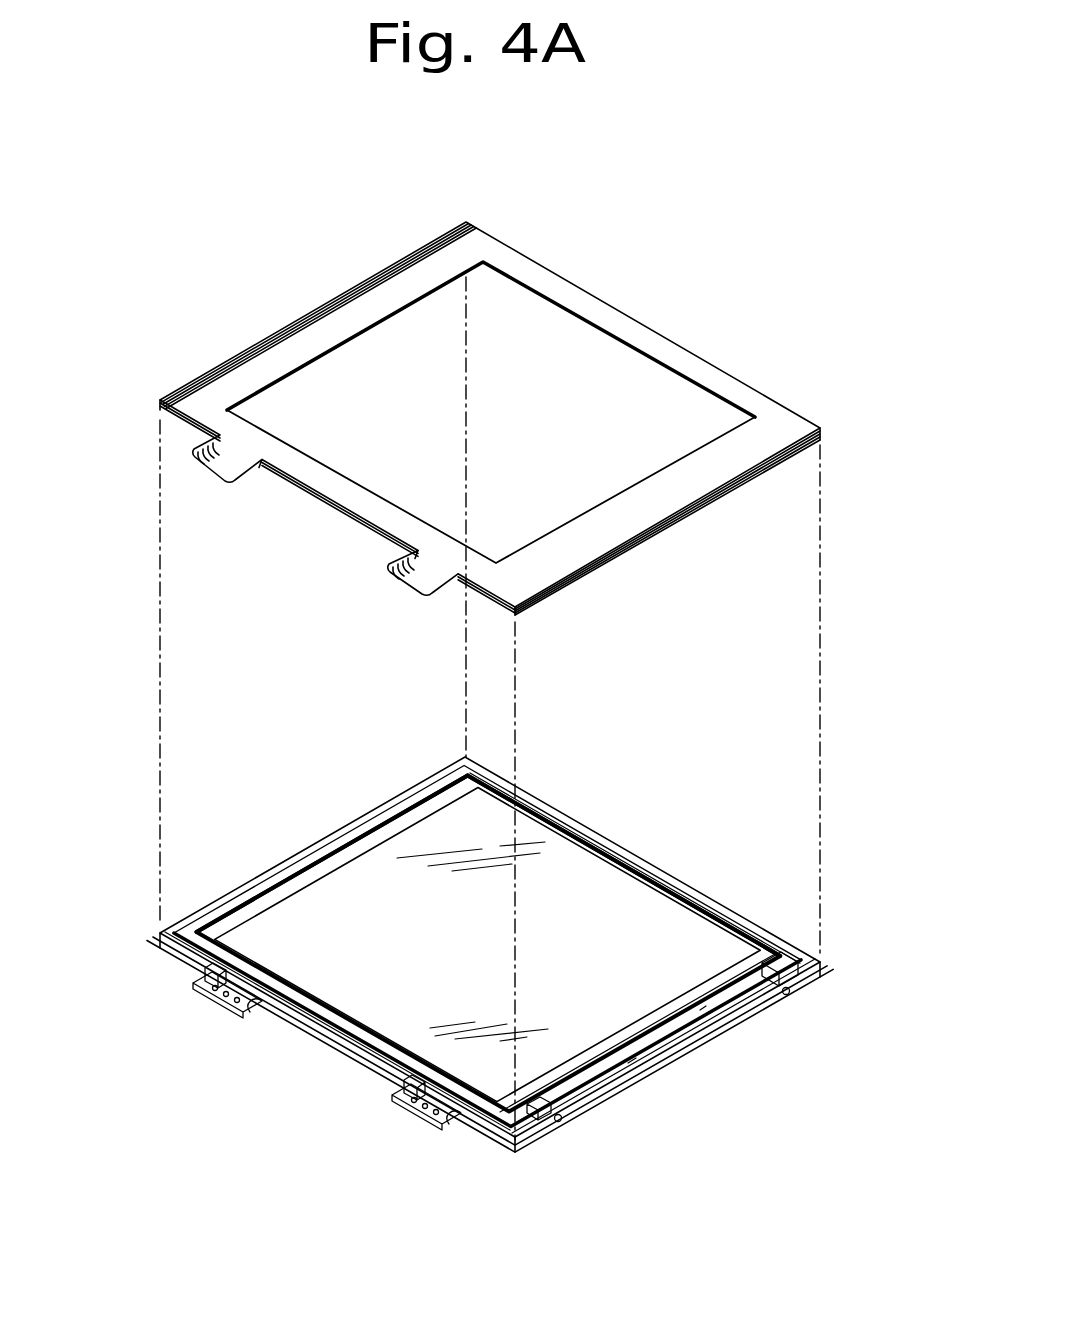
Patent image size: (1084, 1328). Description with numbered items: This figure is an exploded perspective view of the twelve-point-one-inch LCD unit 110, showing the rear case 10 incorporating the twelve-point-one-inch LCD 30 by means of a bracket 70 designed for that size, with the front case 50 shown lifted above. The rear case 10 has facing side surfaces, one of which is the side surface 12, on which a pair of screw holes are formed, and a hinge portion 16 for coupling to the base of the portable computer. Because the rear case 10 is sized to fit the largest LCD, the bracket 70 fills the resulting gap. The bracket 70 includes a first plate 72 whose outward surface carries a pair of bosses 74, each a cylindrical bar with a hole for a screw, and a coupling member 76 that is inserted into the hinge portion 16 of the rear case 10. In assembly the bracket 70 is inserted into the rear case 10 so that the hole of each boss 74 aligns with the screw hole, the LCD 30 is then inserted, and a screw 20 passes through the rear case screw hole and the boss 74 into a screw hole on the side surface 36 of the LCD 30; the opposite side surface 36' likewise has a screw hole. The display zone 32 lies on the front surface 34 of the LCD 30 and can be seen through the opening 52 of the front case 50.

The LCD unit 110 is at (490, 392).
The front case 50 is at (490, 418).
The opening 52 is at (367, 428).
The rear case 10 is at (522, 992).
The side surface 12 is at (663, 1047).
The hinge portion 16 is at (405, 1112).
The screw 20 is at (790, 995).
The LCD 30 is at (488, 945).
The display zone 32 is at (357, 938).
The front surface 34 is at (622, 864).
The side surface 36 is at (489, 944).
The side surface 36' is at (332, 848).
The bracket 70 is at (703, 1016).
The first plate 72 is at (633, 1062).
The boss 74 is at (773, 976).
The coupling member 76 is at (452, 1126).